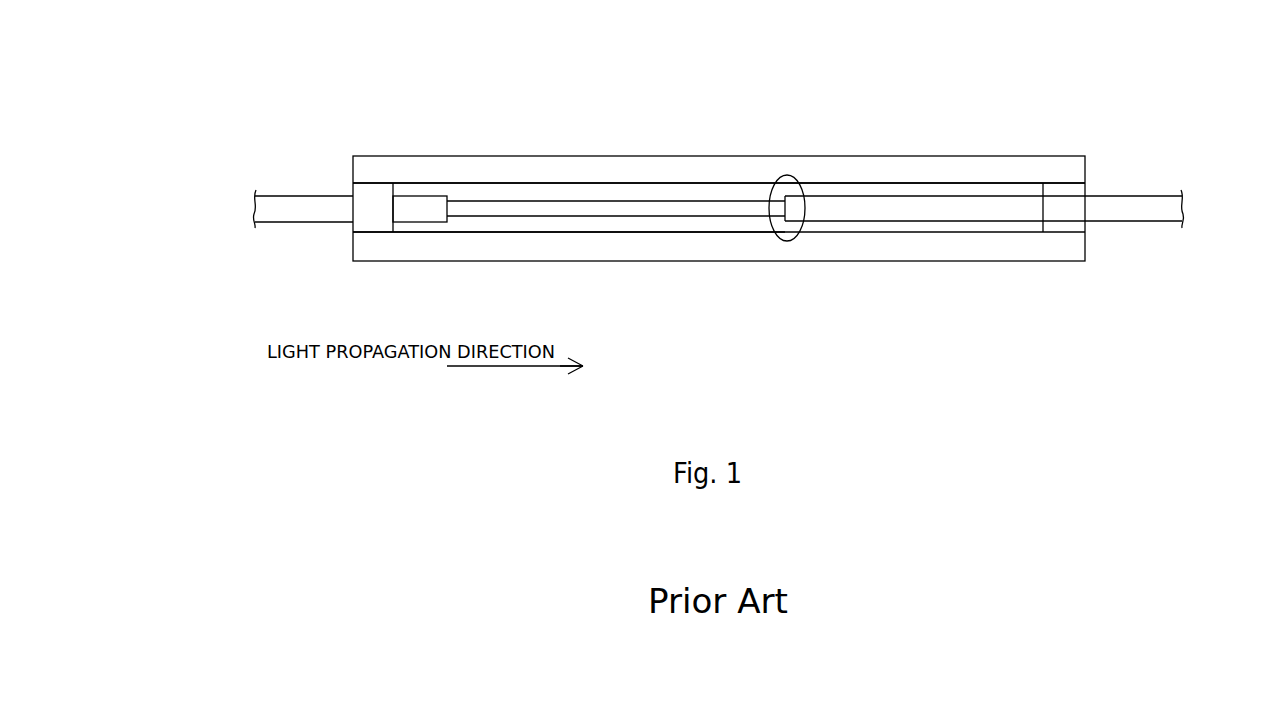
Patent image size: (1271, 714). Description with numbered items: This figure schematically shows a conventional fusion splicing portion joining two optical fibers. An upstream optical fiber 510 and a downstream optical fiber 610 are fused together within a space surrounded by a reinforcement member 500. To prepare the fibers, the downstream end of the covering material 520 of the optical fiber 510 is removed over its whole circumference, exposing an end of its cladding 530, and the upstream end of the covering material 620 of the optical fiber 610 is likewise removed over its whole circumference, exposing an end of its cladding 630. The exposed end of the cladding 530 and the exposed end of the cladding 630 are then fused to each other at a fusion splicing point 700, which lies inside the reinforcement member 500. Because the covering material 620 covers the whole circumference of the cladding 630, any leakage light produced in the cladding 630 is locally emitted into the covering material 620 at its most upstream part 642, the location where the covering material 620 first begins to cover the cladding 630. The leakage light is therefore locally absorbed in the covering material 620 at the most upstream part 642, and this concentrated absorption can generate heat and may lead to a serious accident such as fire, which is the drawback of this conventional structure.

The reinforcement member 500 is at (913, 163).
The optical fiber 510 is at (298, 172).
The covering material 520 is at (407, 213).
The cladding 530 is at (528, 208).
The optical fiber 610 is at (1138, 172).
The covering material 620 is at (958, 215).
The cladding 630 is at (680, 206).
The most upstream part 642 is at (797, 182).
The fusion splicing point 700 is at (617, 203).